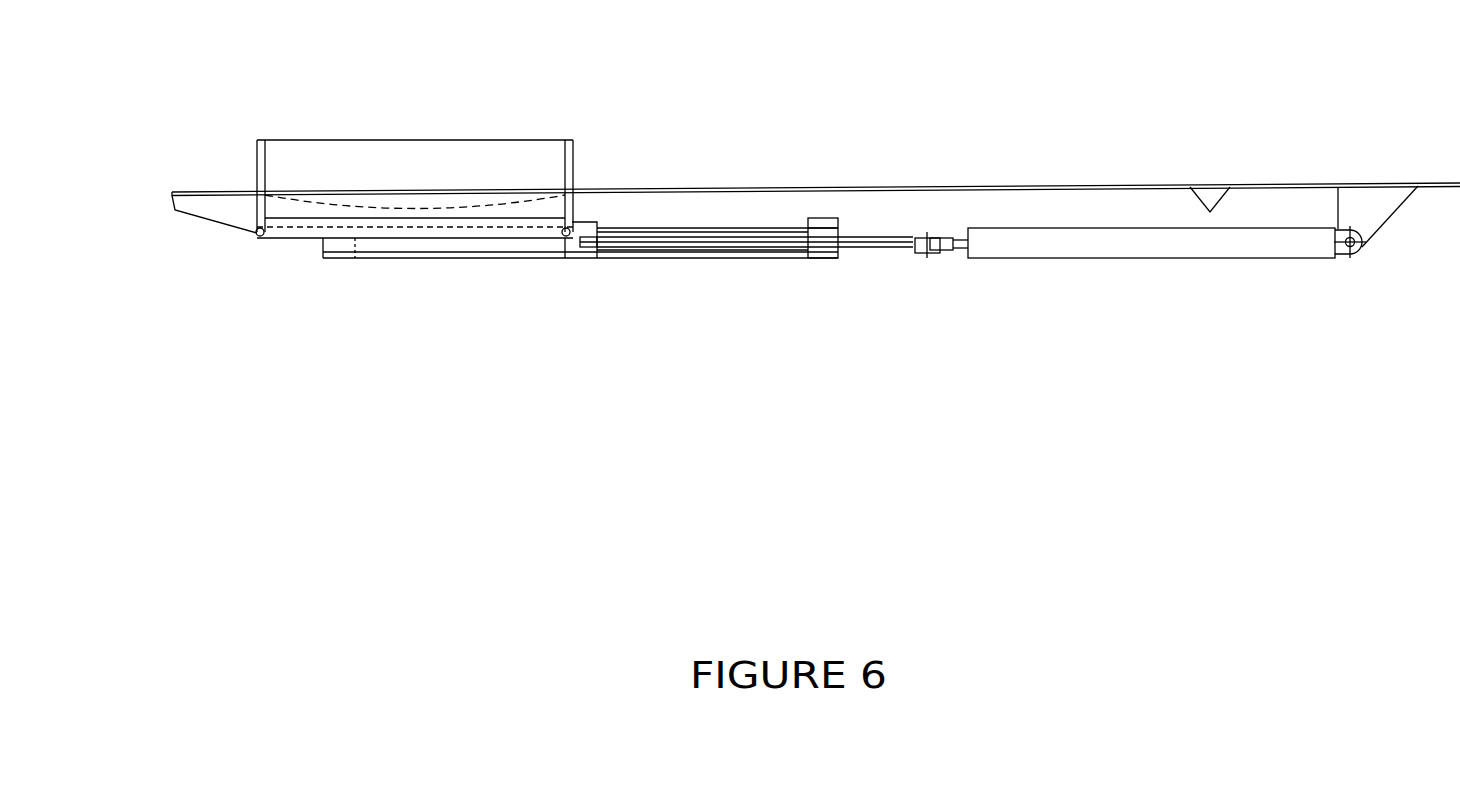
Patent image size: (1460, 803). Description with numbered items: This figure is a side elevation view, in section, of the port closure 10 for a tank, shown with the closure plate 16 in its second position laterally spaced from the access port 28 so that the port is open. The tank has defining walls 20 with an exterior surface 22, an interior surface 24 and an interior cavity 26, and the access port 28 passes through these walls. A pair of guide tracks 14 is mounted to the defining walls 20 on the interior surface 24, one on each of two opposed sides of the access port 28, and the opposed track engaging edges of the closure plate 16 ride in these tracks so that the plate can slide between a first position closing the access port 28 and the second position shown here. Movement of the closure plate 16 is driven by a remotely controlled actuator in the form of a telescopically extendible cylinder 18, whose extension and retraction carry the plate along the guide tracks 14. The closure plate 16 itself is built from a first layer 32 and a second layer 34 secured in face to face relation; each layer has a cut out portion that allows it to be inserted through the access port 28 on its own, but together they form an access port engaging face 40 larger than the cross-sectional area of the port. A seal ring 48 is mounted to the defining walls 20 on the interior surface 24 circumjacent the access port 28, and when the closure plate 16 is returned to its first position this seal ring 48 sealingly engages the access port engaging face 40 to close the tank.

The port closure 10 is at (442, 321).
The guide tracks 14 is at (701, 286).
The closure plate 16 is at (816, 154).
The telescopically extendible cylinder 18 is at (1140, 280).
The defining walls 20 is at (816, 151).
The exterior surface 22 is at (1296, 177).
The interior surface 24 is at (1245, 176).
The interior cavity 26 is at (1032, 362).
The access port 28 is at (263, 140).
The first layer 32 is at (696, 164).
The second layer 34 is at (695, 303).
The access port engaging face 40 is at (746, 179).
The seal ring 48 is at (188, 191).